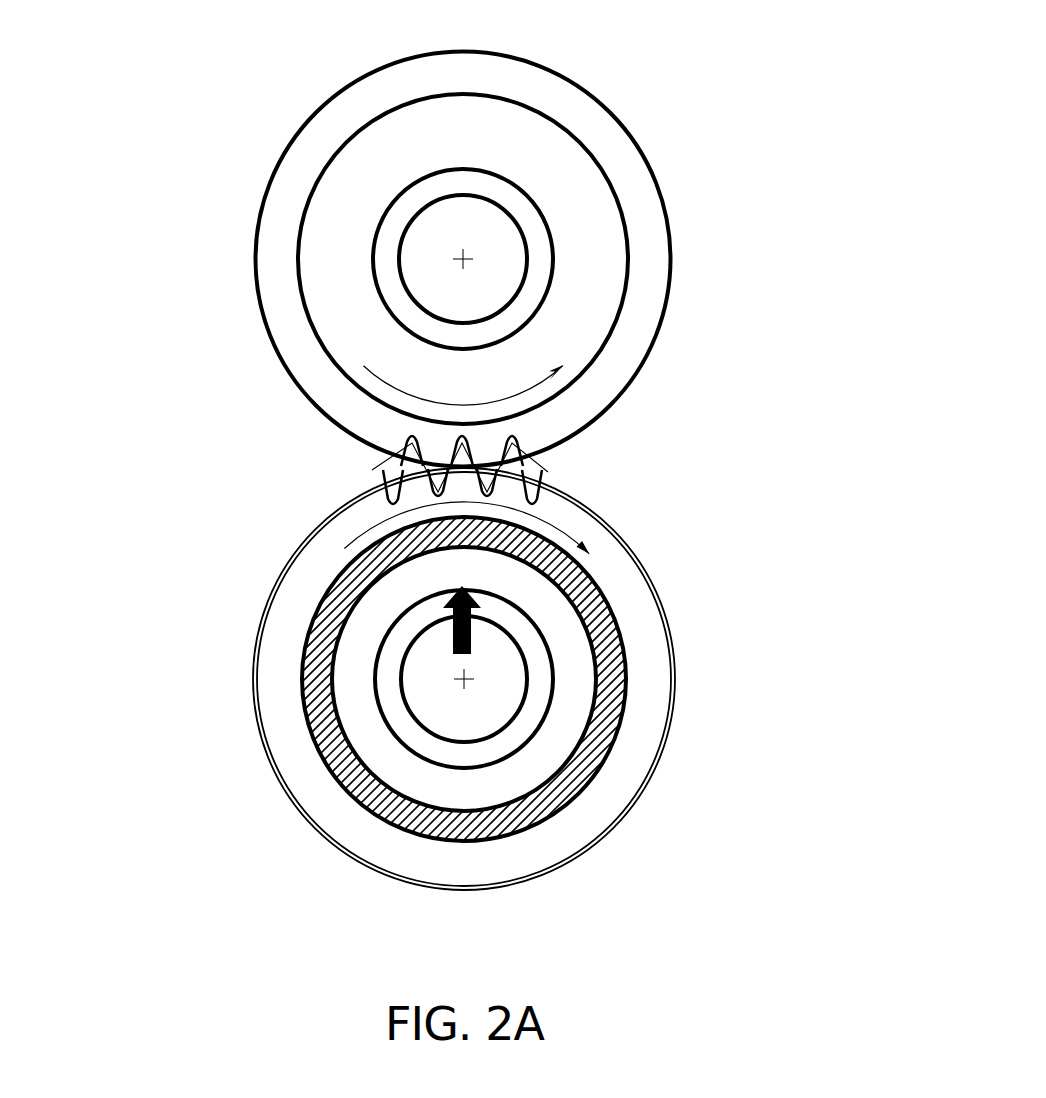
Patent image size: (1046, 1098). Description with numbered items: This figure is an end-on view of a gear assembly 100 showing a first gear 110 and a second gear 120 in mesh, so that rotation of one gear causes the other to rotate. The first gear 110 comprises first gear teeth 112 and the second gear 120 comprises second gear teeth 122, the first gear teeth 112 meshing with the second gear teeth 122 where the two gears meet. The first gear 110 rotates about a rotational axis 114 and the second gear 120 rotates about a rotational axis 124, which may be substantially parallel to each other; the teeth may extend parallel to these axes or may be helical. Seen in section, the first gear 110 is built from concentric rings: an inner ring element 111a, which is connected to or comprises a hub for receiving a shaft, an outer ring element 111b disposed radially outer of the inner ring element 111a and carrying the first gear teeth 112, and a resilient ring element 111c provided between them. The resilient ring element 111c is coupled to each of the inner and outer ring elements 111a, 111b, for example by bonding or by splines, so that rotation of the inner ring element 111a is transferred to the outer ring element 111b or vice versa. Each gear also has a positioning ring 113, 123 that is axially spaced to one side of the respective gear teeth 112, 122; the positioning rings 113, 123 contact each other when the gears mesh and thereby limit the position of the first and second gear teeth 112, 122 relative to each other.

The gear assembly 100 is at (175, 484).
The first gear 110 is at (285, 641).
The inner ring element 111a is at (563, 713).
The outer ring element 111b is at (635, 745).
The resilient ring element 111c is at (593, 765).
The first gear teeth 112 is at (515, 488).
The positioning ring 113 is at (678, 652).
The rotational axis 114 is at (474, 680).
The second gear 120 is at (588, 178).
The second gear teeth 122 is at (428, 440).
The positioning ring 123 is at (652, 352).
The rotational axis 124 is at (463, 259).